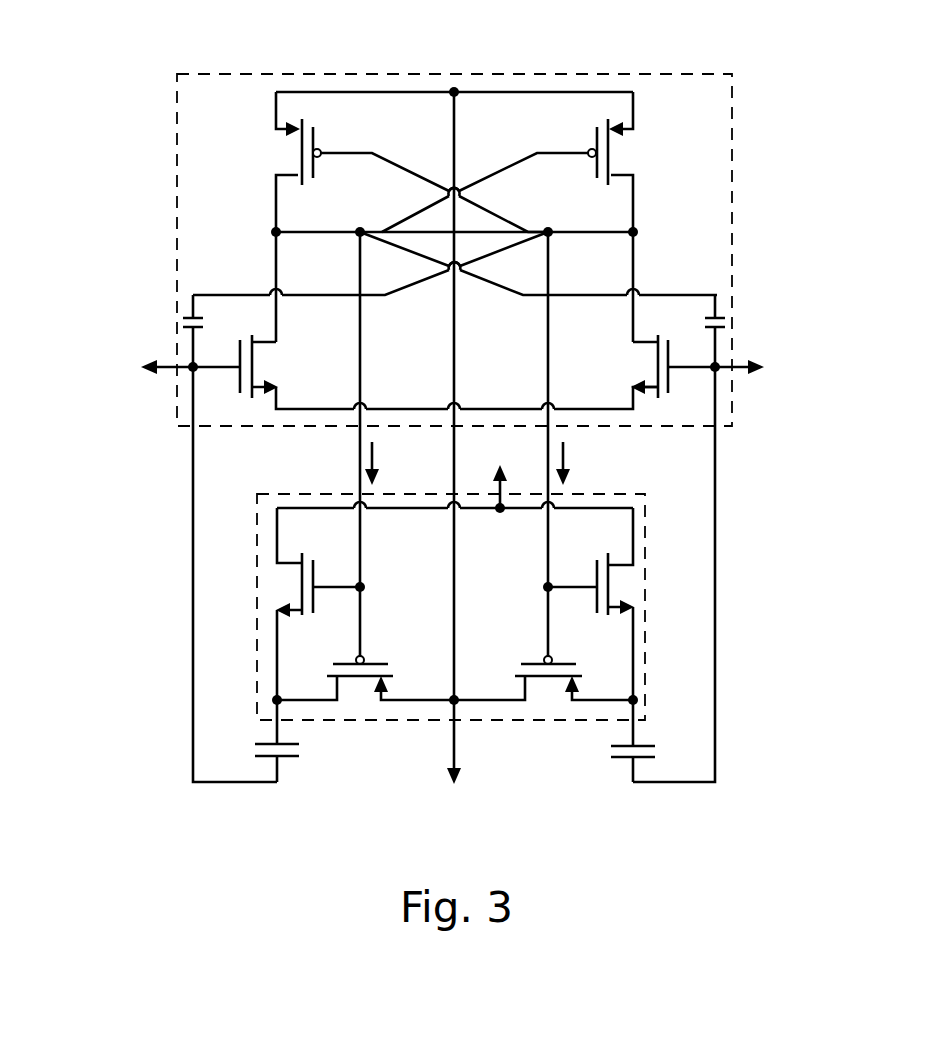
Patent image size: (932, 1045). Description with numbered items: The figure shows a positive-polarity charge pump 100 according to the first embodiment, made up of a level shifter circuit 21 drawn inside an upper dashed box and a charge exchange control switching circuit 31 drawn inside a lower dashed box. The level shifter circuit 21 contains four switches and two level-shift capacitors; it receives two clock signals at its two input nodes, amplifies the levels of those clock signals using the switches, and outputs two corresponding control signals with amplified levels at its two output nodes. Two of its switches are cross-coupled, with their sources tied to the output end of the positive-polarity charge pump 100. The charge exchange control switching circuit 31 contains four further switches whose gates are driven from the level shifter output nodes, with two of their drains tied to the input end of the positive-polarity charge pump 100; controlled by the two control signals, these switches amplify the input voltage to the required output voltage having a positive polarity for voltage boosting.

The positive-polarity charge pump 100 is at (779, 128).
The level shifter circuit 21 is at (733, 252).
The charge exchange control switching circuit 31 is at (646, 620).